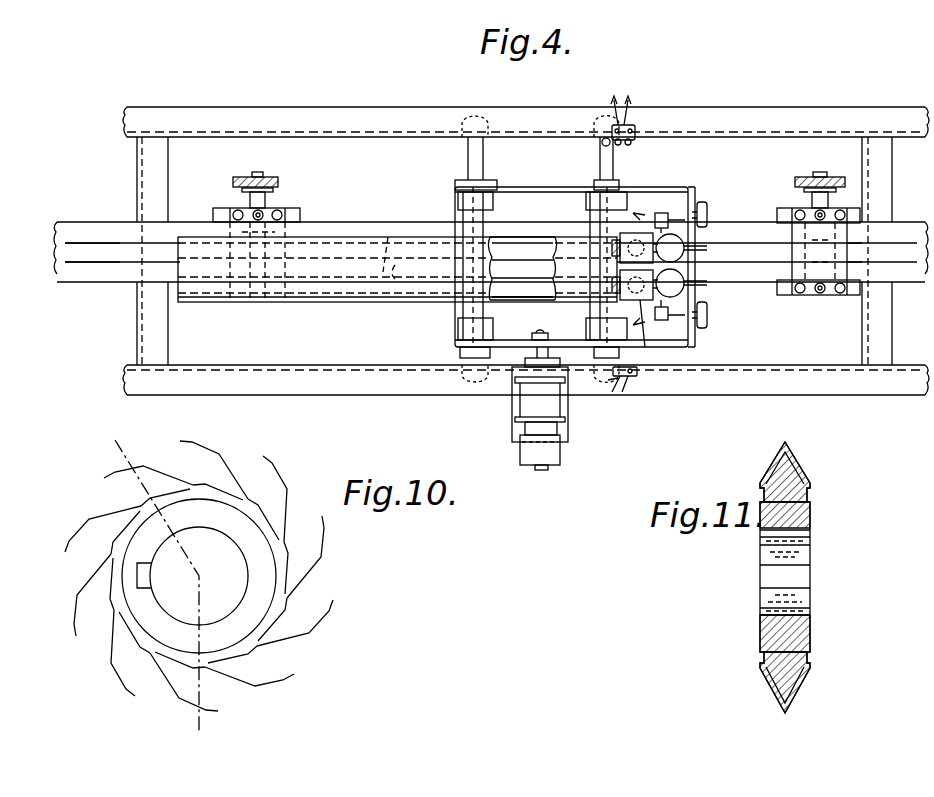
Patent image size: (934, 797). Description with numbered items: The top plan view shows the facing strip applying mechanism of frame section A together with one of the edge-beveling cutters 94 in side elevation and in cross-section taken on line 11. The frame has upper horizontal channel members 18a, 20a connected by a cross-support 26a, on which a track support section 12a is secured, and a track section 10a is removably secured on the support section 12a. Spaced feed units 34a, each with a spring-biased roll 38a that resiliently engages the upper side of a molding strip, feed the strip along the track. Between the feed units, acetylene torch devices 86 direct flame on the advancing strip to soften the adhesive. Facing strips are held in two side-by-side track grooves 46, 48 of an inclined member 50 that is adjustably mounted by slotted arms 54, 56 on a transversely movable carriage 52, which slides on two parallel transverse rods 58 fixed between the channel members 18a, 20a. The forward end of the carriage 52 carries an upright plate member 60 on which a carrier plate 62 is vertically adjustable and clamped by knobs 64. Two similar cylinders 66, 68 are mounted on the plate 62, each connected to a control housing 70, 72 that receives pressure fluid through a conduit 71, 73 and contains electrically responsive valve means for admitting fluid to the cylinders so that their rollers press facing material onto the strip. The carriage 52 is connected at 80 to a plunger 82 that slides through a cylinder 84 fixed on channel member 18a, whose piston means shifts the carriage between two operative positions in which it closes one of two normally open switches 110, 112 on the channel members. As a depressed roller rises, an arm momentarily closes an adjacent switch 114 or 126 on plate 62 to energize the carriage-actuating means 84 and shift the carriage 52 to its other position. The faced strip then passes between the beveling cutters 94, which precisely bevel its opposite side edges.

In FIG. 4, the track section 10a is at (88, 255).
In FIG. 4, the track support section 12a is at (112, 277).
In FIG. 4, the upper horizontal channel member 18a is at (333, 392).
In FIG. 4, the upper horizontal channel member 20a is at (372, 96).
In FIG. 4, the cross-support 26a is at (892, 198).
In FIG. 4, the feed unit 34a is at (289, 206).
In FIG. 4, the spring-biased roll 38a is at (853, 250).
In FIG. 4, the track groove 46 is at (510, 290).
In FIG. 4, the track groove 48 is at (507, 245).
In FIG. 4, the inclined member 50 is at (344, 234).
In FIG. 4, the carriage 52 is at (516, 188).
In FIG. 4, the slotted arm 54 is at (456, 192).
In FIG. 4, the slotted arm 56 is at (598, 186).
In FIG. 4, the transverse rod 58 is at (600, 154).
In FIG. 4, the upright plate member 60 is at (696, 196).
In FIG. 4, the carrier plate 62 is at (700, 300).
In FIG. 4, the clamping knob 64 is at (708, 214).
In FIG. 4, the cylinder 66 is at (685, 270).
In FIG. 4, the cylinder 68 is at (684, 238).
In FIG. 4, the control housing 70 is at (645, 345).
In FIG. 4, the conduit 71 is at (707, 284).
In FIG. 4, the control housing 72 is at (640, 237).
In FIG. 4, the conduit 73 is at (708, 249).
In FIG. 4, the connection 80 is at (538, 338).
In FIG. 4, the rod or plunger 82 is at (526, 358).
In FIG. 4, the cylinder 84 is at (525, 415).
In FIG. 4, the acetylene torch device 86 is at (388, 237).
In FIG. 4, the switch 110 is at (633, 380).
In FIG. 4, the switch 112 is at (629, 124).
In FIG. 4, the switch 114 is at (663, 310).
In FIG. 4, the switch 126 is at (665, 213).
In FIG. 10, the edge-beveling cutter 94 is at (302, 591).
In FIG. 11, the edge-beveling cutter 94 is at (760, 628).
In FIG. 10, the section line 11 is at (117, 437).